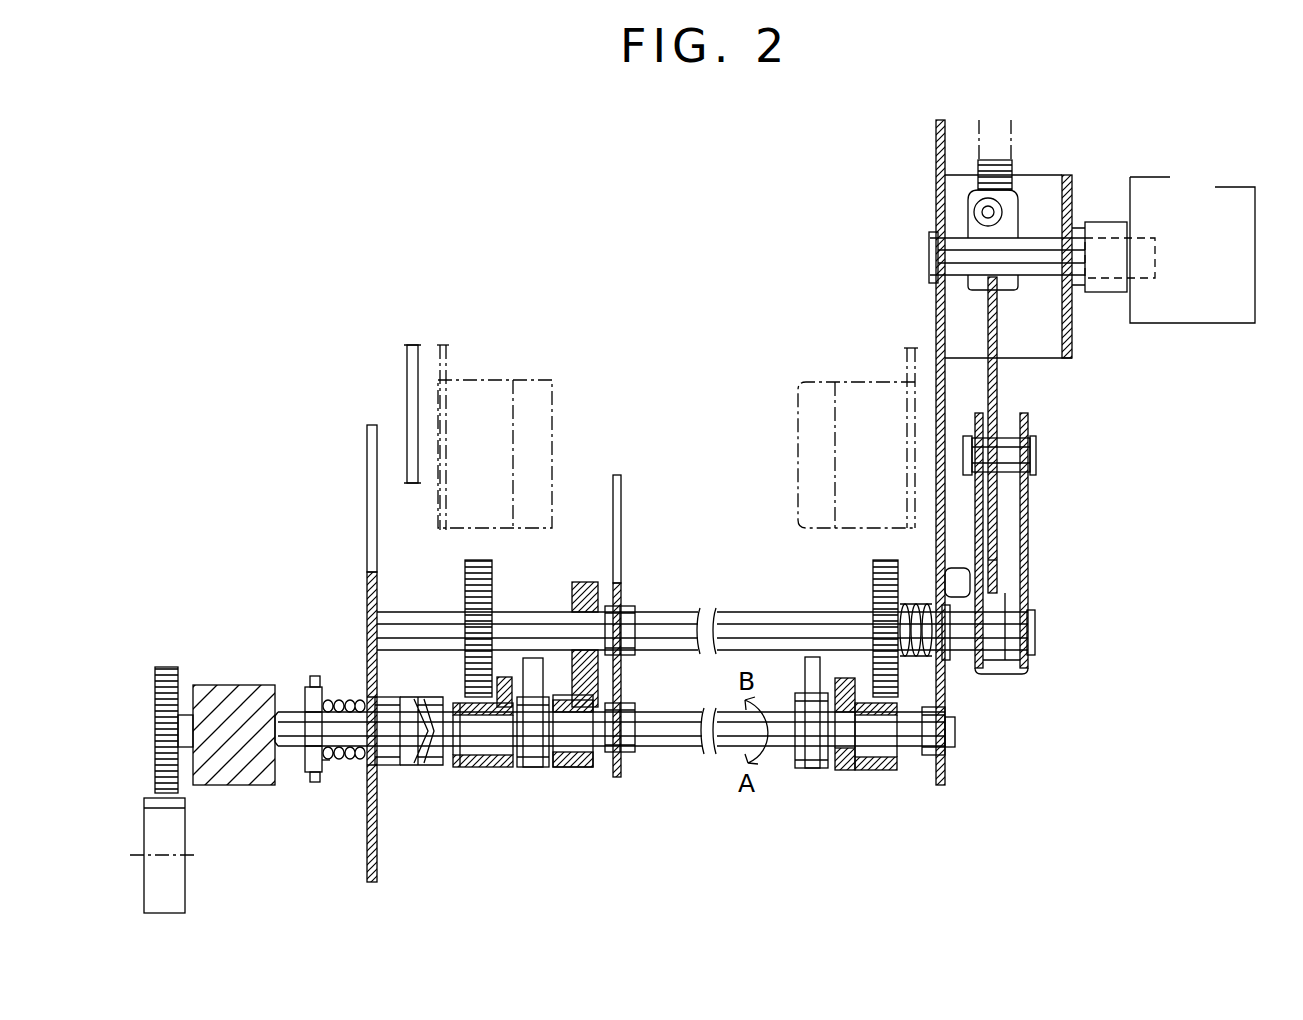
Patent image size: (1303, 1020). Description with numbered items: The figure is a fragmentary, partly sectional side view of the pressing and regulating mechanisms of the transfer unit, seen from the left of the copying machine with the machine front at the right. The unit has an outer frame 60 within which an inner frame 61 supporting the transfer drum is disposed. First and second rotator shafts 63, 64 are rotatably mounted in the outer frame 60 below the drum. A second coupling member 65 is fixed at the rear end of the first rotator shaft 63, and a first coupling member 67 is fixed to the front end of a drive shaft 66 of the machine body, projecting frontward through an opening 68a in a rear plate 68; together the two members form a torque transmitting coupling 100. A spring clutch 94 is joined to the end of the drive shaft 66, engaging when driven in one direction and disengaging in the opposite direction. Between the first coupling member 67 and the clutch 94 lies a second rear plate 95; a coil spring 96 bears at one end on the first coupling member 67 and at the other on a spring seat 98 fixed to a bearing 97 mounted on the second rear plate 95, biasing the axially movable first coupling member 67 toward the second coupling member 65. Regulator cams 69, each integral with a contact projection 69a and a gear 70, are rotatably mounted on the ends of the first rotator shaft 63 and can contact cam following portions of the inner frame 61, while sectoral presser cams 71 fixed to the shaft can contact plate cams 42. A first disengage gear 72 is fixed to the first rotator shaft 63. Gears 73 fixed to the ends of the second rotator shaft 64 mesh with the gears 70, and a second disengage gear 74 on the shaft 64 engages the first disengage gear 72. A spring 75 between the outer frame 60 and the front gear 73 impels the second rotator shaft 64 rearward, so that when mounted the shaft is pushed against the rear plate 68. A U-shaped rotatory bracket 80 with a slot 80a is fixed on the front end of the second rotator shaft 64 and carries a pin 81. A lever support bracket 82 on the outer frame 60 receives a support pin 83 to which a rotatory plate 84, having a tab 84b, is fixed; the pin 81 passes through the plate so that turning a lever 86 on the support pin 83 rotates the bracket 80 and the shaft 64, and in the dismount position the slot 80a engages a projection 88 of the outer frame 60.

The plate cam 42 is at (548, 412).
The outer frame 60 is at (937, 135).
The inner frame 61 is at (447, 362).
The first rotator shaft 63 is at (670, 730).
The second rotator shaft 64 is at (672, 622).
The second coupling member 65 is at (428, 767).
The drive shaft 66 is at (290, 712).
The first coupling member 67 is at (387, 767).
The rear plate 68 is at (367, 505).
The opening 68a is at (372, 690).
The regulator cam 69 is at (535, 767).
The contact projection 69a is at (505, 677).
The gear 70 is at (470, 768).
The presser cam 71 is at (575, 767).
The first disengage gear 72 is at (620, 777).
The gear 73 is at (465, 585).
The second disengage gear 74 is at (586, 582).
The spring 75 is at (905, 655).
The rotatory bracket 80 is at (1028, 530).
The slot 80a is at (993, 560).
The pin 81 is at (1032, 455).
The lever support bracket 82 is at (1068, 195).
The support pin 83 is at (932, 240).
The rotatory plate 84 is at (997, 378).
The tab 84b is at (982, 208).
The lever 86 is at (1230, 215).
The projection 88 is at (970, 583).
The spring clutch 94 is at (235, 760).
The second rear plate 95 is at (317, 678).
The coil spring 96 is at (345, 768).
The bearing 97 is at (312, 690).
The spring seat 98 is at (325, 762).
The torque transmitting coupling 100 is at (470, 852).